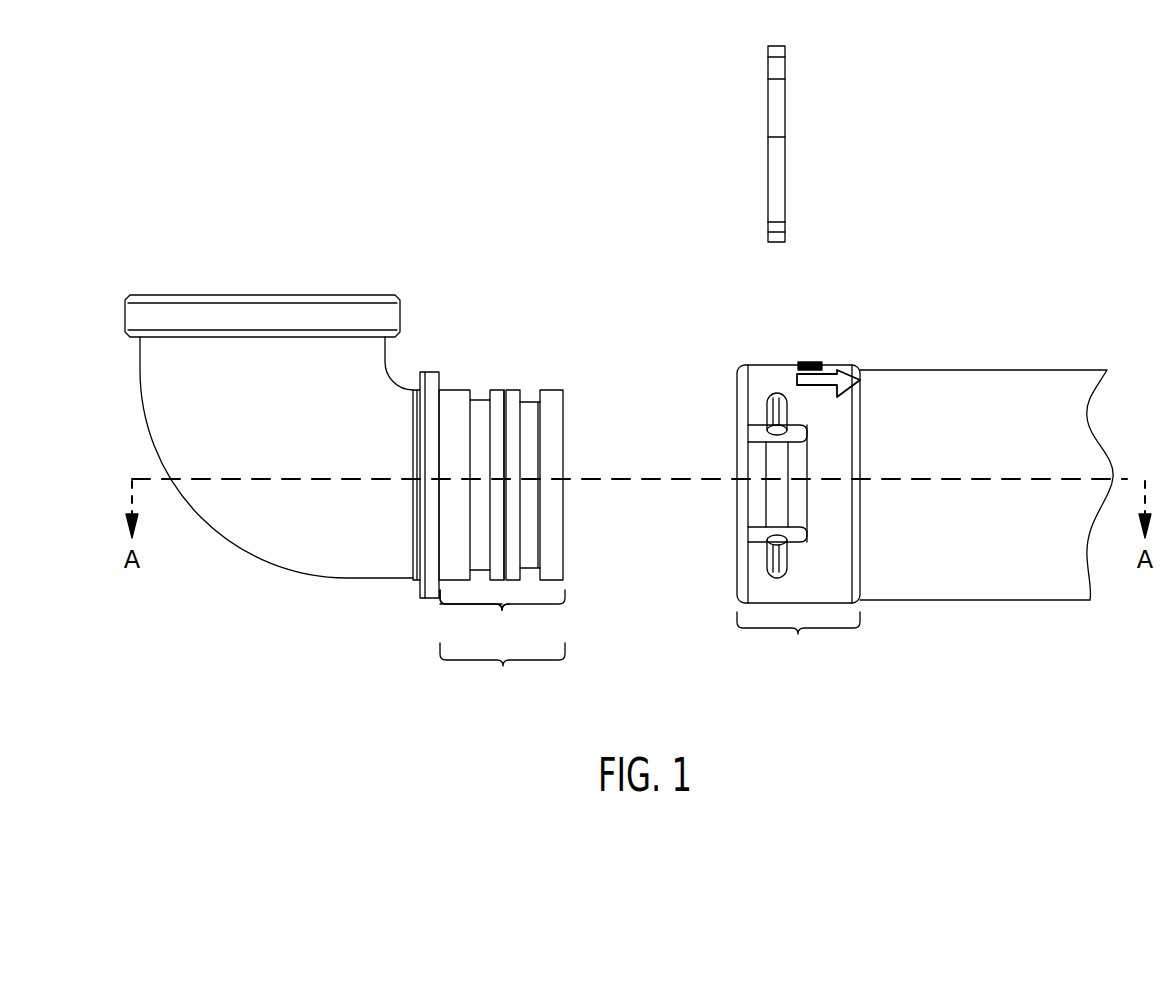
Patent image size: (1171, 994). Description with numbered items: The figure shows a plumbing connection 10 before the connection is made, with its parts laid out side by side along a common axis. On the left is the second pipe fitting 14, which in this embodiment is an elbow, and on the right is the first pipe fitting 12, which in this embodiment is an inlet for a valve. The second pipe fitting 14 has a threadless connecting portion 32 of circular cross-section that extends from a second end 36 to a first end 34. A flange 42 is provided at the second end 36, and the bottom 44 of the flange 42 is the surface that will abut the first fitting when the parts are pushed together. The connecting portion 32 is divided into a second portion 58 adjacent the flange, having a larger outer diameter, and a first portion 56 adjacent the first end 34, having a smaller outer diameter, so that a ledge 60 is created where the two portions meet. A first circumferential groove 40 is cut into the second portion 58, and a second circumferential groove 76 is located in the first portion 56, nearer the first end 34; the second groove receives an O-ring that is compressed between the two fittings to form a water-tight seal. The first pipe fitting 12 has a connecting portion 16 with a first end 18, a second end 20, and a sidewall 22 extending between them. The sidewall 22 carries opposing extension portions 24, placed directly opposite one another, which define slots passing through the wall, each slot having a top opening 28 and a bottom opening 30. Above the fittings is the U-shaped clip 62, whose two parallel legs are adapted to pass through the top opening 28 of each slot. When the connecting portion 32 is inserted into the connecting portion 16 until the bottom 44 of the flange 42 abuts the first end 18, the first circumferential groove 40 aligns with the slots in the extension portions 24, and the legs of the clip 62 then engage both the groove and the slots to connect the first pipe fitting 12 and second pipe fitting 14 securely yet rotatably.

The plumbing connection 10 is at (1016, 158).
The first pipe fitting 12 is at (1023, 382).
The second pipe fitting 14 is at (160, 422).
The connecting portion 16 is at (809, 480).
The first end 18 is at (735, 490).
The second end 20 is at (862, 470).
The sidewall 22 is at (775, 365).
The extension portions 24 is at (775, 500).
The top opening 28 is at (787, 414).
The bottom opening 30 is at (787, 556).
The connecting portion 32 is at (530, 509).
The first end 34 is at (566, 487).
The second end 36 is at (413, 483).
The first circumferential groove 40 is at (480, 398).
The flange 42 is at (432, 383).
The bottom of the flange 44 is at (443, 380).
The first portion 56 is at (533, 615).
The second portion 58 is at (474, 615).
The ledge 60 is at (515, 389).
The U-shaped clip 62 is at (785, 117).
The second circumferential groove 76 is at (530, 423).